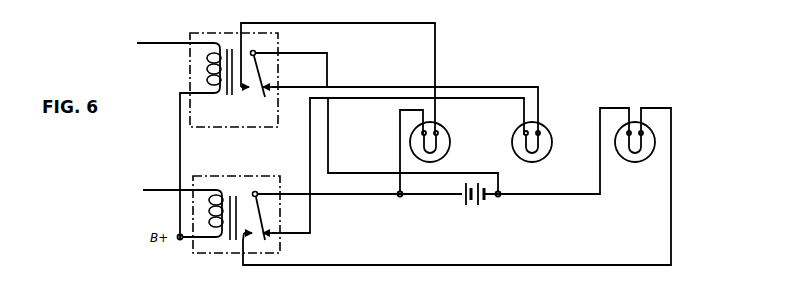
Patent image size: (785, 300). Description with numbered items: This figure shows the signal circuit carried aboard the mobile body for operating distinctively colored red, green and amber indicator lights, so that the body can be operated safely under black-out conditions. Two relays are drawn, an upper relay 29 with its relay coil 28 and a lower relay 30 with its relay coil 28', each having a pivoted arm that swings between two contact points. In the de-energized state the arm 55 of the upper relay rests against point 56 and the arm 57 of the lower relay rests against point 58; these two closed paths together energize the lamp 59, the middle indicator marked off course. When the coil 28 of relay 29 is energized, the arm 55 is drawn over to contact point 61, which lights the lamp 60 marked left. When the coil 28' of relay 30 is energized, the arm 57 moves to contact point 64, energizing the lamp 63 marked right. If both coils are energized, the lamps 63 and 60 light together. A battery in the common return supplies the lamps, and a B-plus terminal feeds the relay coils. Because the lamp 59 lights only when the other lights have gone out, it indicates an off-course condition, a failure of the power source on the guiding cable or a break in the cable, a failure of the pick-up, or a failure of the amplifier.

The relay 29 is at (207, 34).
The relay coil 28 is at (191, 72).
The arm 55 is at (258, 69).
The point 61 is at (250, 92).
The point 56 is at (270, 95).
The relay 30 is at (223, 176).
The relay coil 28' is at (185, 217).
The arm 57 is at (263, 210).
The point 64 is at (250, 237).
The point 58 is at (271, 236).
The lamp 60 is at (452, 148).
The lamp 59 is at (556, 138).
The lamp 63 is at (655, 147).